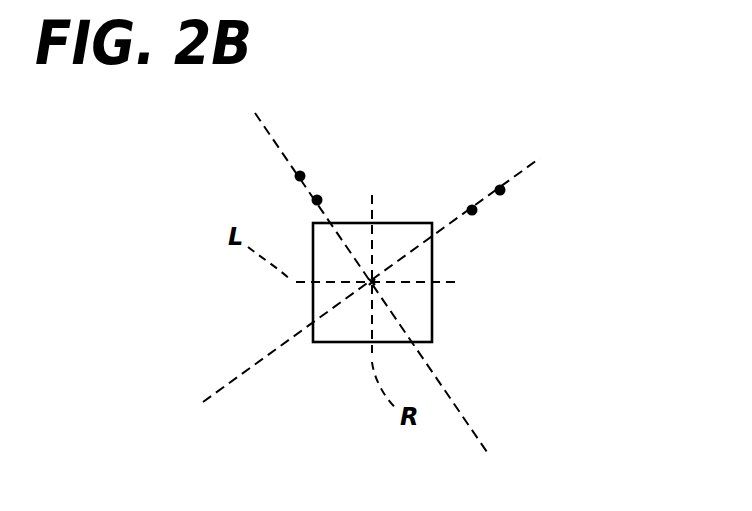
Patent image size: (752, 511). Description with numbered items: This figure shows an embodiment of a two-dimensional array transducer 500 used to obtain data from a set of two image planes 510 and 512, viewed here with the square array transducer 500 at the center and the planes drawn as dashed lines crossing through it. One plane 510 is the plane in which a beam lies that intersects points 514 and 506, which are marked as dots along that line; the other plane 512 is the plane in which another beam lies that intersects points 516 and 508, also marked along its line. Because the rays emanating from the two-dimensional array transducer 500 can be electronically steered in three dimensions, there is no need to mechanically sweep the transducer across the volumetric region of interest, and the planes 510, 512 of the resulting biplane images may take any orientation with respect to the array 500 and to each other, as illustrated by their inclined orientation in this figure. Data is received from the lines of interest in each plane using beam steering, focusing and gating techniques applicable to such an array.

The two-dimensional array transducer 500 is at (397, 223).
The point 506 is at (505, 193).
The point 508 is at (294, 175).
The plane 510 is at (530, 165).
The plane 512 is at (282, 125).
The point 514 is at (476, 214).
The point 516 is at (312, 200).